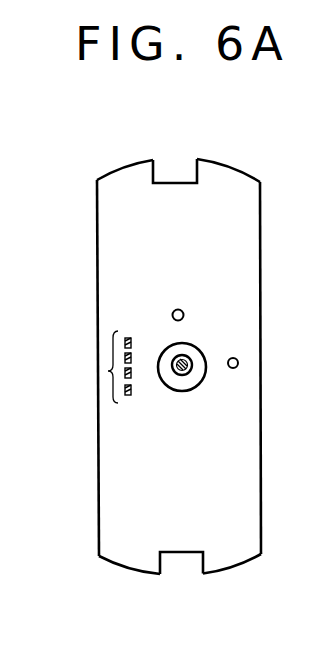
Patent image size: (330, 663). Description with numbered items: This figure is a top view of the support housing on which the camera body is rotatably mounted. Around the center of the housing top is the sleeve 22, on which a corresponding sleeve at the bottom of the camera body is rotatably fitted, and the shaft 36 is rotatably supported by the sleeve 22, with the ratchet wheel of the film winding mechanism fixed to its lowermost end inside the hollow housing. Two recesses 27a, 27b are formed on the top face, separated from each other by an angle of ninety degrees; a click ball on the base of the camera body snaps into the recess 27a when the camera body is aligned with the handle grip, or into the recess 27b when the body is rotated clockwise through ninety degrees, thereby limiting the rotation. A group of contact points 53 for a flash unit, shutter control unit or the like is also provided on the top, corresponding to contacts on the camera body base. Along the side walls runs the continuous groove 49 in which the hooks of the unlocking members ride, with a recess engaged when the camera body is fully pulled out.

The groove 49 is at (175, 182).
The recess 27a is at (178, 309).
The recess 27b is at (239, 363).
The shaft 36 is at (189, 357).
The sleeve 22 is at (190, 376).
The group of contact points 53 is at (108, 371).